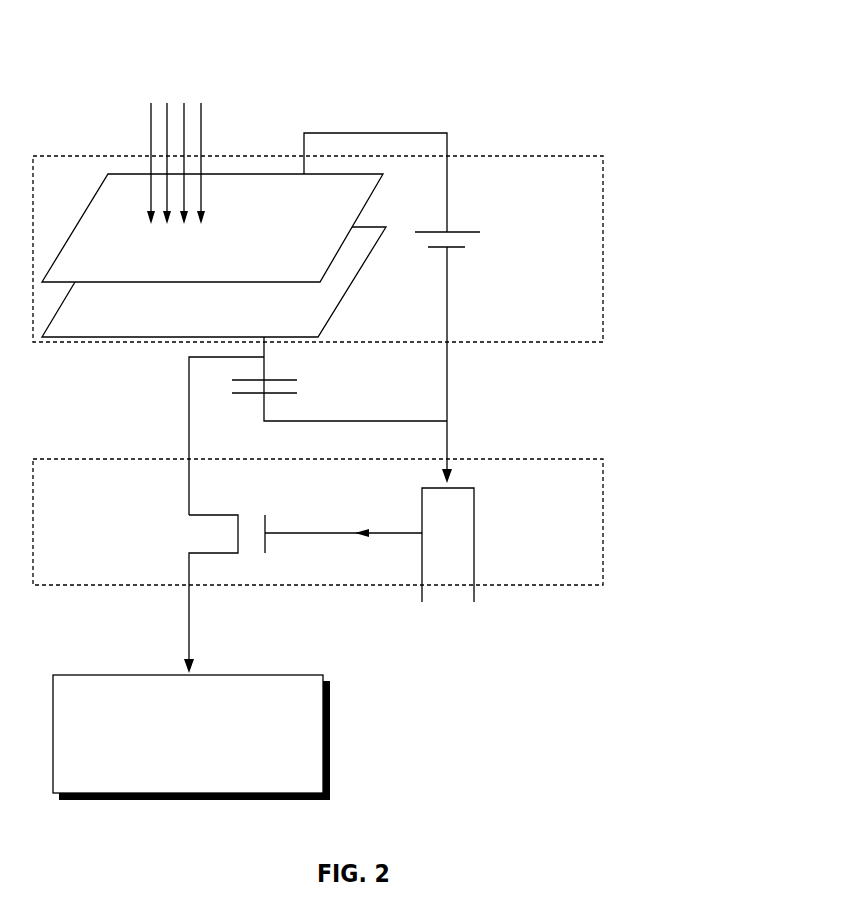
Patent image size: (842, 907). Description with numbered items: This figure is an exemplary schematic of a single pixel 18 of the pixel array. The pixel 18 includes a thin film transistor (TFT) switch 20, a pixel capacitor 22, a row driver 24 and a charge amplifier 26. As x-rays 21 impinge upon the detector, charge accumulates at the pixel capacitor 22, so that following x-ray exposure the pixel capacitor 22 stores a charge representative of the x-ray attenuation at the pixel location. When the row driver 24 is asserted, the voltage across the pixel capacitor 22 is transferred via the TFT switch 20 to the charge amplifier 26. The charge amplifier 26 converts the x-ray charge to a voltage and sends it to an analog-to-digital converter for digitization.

The pixel 18 is at (492, 58).
The thin film transistor switch 20 is at (604, 243).
The x-rays 21 is at (148, 145).
The pixel capacitor 22 is at (240, 393).
The row driver 24 is at (604, 522).
The charge amplifier 26 is at (331, 738).